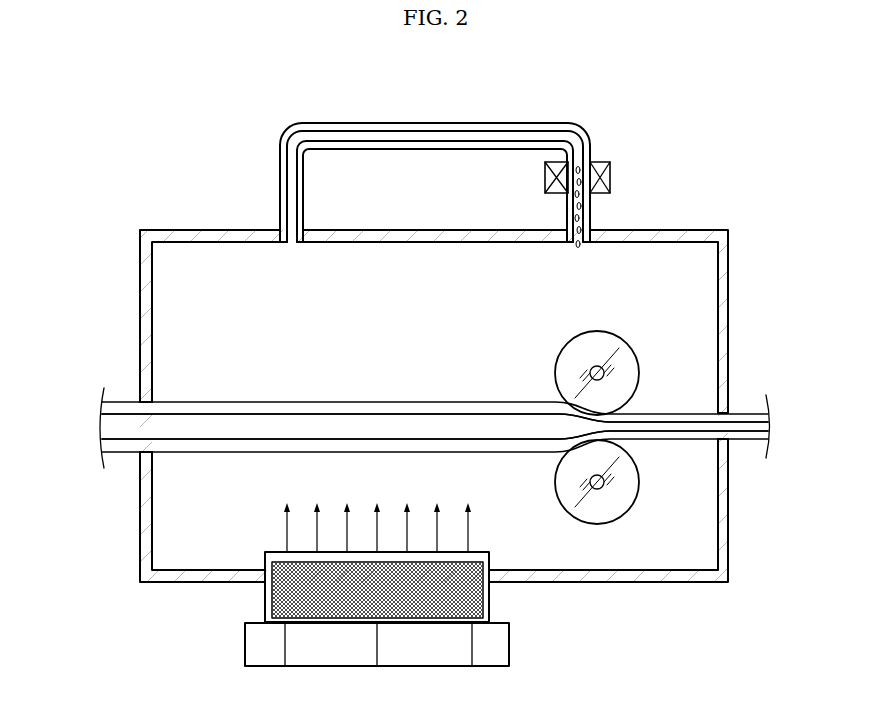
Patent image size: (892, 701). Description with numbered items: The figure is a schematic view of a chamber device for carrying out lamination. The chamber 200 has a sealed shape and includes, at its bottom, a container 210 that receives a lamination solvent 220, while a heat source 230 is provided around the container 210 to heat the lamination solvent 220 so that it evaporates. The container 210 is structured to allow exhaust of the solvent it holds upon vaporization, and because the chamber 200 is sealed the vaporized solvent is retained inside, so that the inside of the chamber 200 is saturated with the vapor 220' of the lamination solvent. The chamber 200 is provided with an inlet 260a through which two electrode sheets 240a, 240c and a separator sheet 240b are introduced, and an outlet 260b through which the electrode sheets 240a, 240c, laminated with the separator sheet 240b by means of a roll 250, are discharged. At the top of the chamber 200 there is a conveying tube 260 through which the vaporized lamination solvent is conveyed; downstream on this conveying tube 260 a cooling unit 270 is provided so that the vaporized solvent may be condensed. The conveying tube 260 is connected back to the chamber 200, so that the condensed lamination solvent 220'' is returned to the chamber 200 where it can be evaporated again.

The chamber 200 is at (168, 136).
The container 210 is at (490, 606).
The lamination solvent 220 is at (337, 590).
The vapor of the lamination solvent 220' is at (377, 365).
The condensed lamination solvent 220'' is at (628, 207).
The heat source 230 is at (510, 644).
The electrode sheet 240a is at (102, 406).
The separator sheet 240b is at (102, 425).
The electrode sheet 240c is at (102, 445).
The roll 250 is at (622, 365).
The conveying tube 260 is at (428, 138).
The inlet 260a is at (138, 400).
The outlet 260b is at (732, 411).
The cooling unit 270 is at (612, 172).